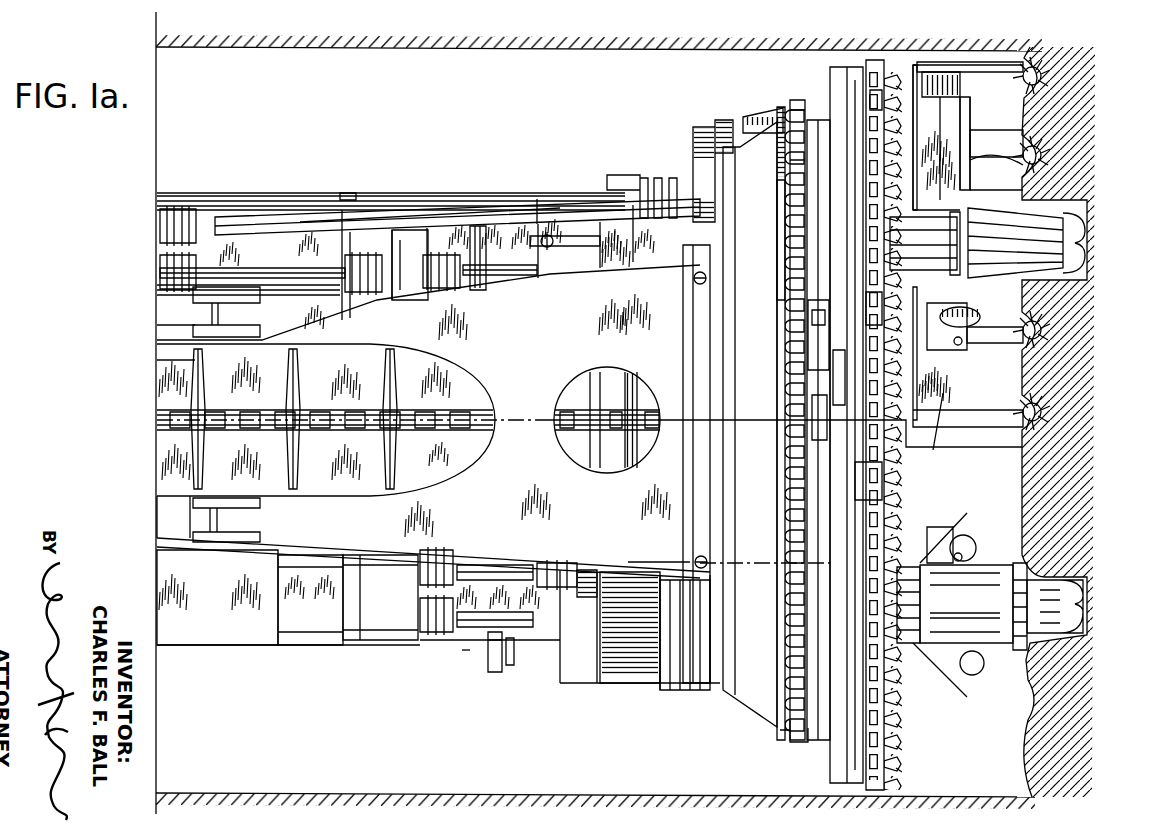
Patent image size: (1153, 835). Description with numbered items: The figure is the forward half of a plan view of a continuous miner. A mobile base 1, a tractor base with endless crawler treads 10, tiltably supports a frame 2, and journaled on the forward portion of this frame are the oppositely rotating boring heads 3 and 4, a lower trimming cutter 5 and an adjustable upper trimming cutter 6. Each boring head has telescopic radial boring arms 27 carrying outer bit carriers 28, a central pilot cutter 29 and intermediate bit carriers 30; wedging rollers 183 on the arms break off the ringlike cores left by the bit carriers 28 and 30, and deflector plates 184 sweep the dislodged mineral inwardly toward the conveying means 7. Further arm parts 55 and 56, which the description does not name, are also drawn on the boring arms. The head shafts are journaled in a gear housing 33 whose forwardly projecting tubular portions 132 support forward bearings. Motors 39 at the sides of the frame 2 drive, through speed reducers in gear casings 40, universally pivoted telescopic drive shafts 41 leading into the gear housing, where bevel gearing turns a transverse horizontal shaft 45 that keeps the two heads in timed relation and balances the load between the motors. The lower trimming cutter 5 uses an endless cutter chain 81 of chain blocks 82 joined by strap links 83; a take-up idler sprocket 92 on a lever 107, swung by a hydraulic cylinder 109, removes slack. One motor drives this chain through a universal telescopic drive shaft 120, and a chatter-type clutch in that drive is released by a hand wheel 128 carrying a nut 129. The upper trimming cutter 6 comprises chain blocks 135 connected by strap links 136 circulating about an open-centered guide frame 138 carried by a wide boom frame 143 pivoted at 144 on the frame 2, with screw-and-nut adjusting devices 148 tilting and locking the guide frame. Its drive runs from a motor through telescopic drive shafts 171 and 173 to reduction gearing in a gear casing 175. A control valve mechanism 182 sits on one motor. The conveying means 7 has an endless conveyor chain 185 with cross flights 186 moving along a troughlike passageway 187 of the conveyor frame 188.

The mobile base 1 is at (462, 653).
The frame 2 is at (170, 515).
The boring head 3 is at (975, 128).
The boring head 4 is at (978, 563).
The lower trimming cutter 5 is at (897, 738).
The upper trimming cutter 6 is at (628, 560).
The conveying means 7 is at (192, 449).
The endless crawler treads 10 is at (498, 232).
The telescopic radial boring arms 27 is at (920, 105).
The outer cutter supports or bit carriers 28 is at (1045, 70).
The central pilot cutter 29 is at (1065, 237).
The intermediate cutter supports or bit carriers 30 is at (1045, 157).
The gear housing 33 is at (620, 240).
The motors 39 is at (205, 207).
The gear casings 40 is at (400, 245).
The universally pivoted telescopic drive shafts 41 is at (500, 286).
The transverse horizontal shaft 45 is at (630, 392).
The cutter arm 55 is at (962, 86).
The bracket plate 56 is at (945, 147).
The cutter chain 81 is at (876, 306).
The chain blocks 82 is at (905, 219).
The strap links 83 is at (880, 98).
The take-up idler sprocket 92 is at (865, 478).
The lever 107 is at (850, 365).
The hydraulic cylinder 109 is at (820, 405).
The universal telescopic drive shaft 120 is at (468, 627).
The hand wheel 128 is at (490, 672).
The nut 129 is at (509, 665).
The forwardly projecting tubular portions 132 is at (805, 232).
The chain blocks 135 is at (808, 358).
The strap links 136 is at (798, 724).
The guide frame 138 is at (797, 310).
The boom frame 143 is at (535, 232).
The pivot 144 is at (222, 314).
The adjusting devices 148 is at (694, 280).
The universal telescopic drive shaft 171 is at (325, 270).
The universal telescopic drive shaft 173 is at (455, 212).
The gear casing 175 is at (703, 133).
The control valve mechanism 182 is at (208, 620).
The wedging rollers 183 is at (1010, 680).
The deflector plates 184 is at (925, 68).
The endless conveyor chain 185 is at (172, 422).
The cross flights 186 is at (388, 370).
The troughlike passageway 187 is at (177, 360).
The conveyor frame 188 is at (178, 342).